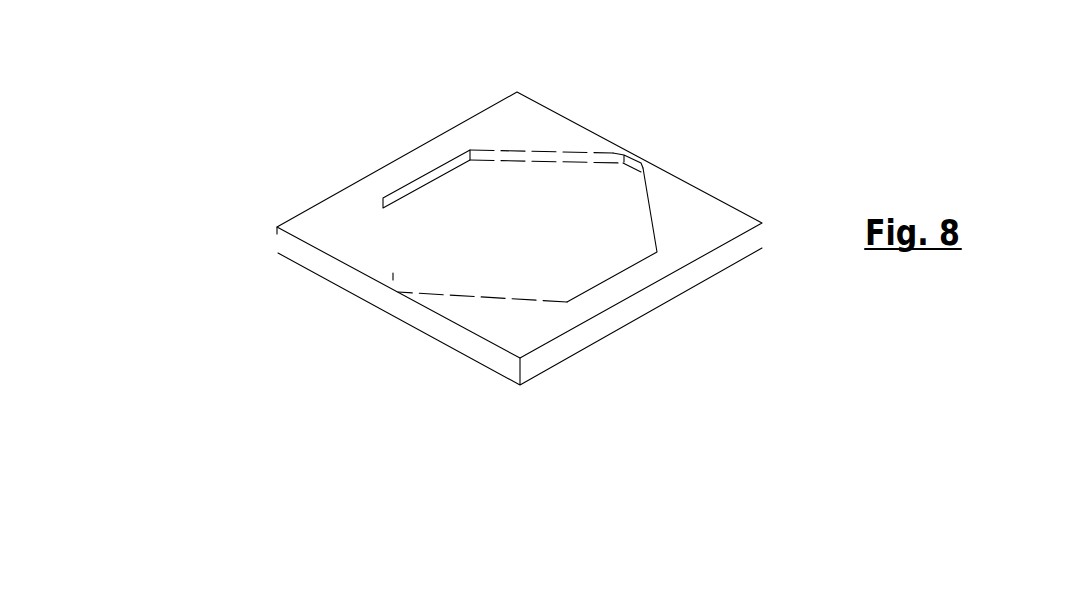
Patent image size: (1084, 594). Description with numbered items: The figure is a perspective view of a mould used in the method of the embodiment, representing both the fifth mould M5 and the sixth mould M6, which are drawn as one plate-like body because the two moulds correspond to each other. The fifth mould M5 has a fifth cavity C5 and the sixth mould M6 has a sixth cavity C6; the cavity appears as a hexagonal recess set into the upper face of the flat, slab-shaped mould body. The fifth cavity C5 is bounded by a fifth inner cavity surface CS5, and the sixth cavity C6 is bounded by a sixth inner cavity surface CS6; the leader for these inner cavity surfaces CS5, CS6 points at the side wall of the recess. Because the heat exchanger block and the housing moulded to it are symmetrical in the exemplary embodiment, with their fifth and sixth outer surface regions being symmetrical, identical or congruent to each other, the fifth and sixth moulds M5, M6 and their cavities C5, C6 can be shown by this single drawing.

The fifth mould M5 is at (419, 248).
The sixth mould M6 is at (288, 315).
The fifth cavity C5 is at (589, 248).
The sixth cavity C6 is at (558, 201).
The fifth inner cavity surface CS5 is at (597, 316).
The sixth inner cavity surface CS6 is at (547, 260).